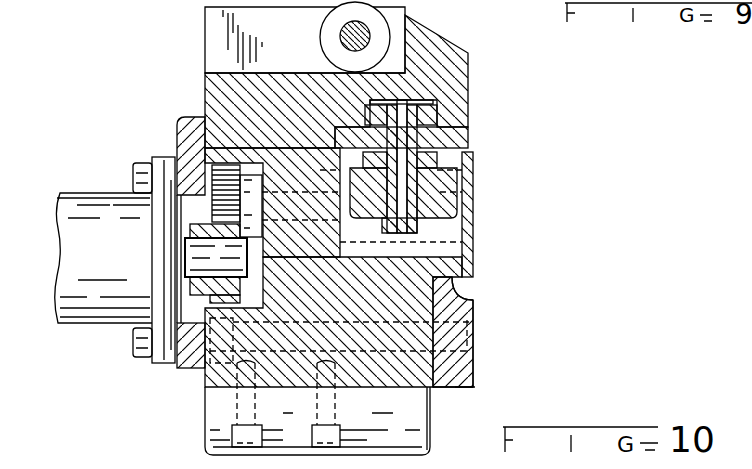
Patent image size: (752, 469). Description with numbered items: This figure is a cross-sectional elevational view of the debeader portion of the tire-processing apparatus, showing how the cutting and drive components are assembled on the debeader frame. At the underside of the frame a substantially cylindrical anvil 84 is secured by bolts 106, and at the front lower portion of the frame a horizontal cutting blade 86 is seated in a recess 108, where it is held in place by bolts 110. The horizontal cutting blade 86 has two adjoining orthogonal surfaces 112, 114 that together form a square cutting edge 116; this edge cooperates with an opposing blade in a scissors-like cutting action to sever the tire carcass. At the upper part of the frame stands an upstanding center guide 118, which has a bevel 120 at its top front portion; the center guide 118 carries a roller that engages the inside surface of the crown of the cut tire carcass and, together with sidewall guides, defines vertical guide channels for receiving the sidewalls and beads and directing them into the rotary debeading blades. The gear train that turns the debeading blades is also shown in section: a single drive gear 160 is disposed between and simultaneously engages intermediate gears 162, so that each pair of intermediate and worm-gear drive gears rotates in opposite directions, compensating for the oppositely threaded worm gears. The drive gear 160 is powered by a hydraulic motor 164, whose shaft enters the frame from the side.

The anvil 84 is at (417, 438).
The horizontal cutting blade 86 is at (475, 320).
The bolts 106 is at (232, 438).
The recess 108 is at (472, 300).
The bolts 110 is at (330, 320).
The orthogonal surface 112 is at (477, 373).
The orthogonal surface 114 is at (462, 390).
The square cutting edge 116 is at (475, 387).
The center guide 118 is at (469, 73).
The bevel 120 is at (445, 36).
The drive gear 160 is at (235, 292).
The intermediate gears 162 is at (231, 167).
The hydraulic motor 164 is at (94, 193).